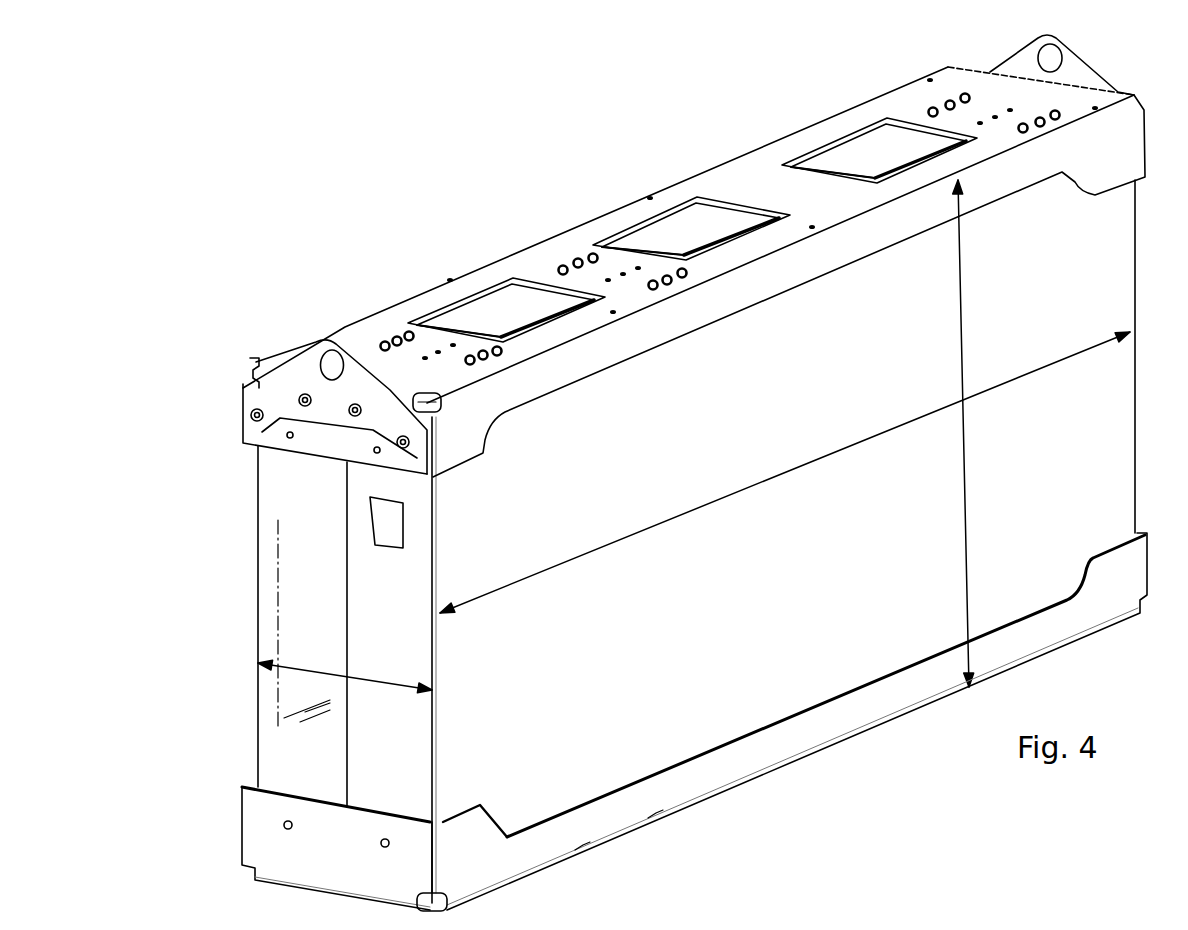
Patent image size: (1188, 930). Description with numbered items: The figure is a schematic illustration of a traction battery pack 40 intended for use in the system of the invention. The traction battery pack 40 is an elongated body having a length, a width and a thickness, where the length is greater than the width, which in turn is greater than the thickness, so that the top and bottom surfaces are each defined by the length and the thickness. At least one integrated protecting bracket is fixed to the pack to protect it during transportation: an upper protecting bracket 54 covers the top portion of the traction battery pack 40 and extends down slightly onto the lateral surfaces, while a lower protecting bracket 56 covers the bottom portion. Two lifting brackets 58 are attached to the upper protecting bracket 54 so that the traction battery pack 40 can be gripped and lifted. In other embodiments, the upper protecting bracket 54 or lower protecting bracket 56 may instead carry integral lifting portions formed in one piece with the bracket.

The traction battery pack 40 is at (372, 277).
The upper protecting bracket 54 is at (563, 250).
The lower protecting bracket 56 is at (707, 772).
The lifting bracket 58 is at (312, 373).